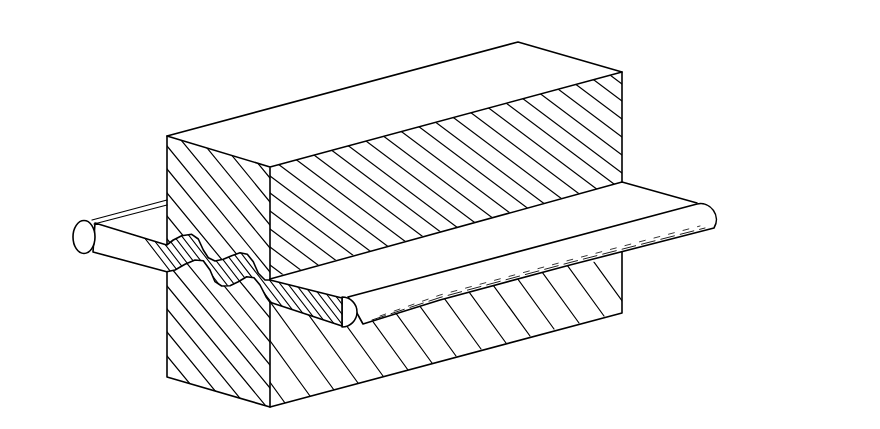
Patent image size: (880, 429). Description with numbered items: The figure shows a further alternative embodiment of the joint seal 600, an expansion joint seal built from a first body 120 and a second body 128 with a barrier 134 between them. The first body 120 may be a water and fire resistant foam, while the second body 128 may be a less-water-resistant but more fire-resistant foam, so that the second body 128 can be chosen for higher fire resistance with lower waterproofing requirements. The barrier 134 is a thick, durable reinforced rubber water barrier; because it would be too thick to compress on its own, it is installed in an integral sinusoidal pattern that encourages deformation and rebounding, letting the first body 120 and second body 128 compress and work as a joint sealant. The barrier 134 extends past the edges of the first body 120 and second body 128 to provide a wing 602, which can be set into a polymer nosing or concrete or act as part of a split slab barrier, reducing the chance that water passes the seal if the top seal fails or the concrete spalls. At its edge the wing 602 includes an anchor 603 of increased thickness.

The joint seal 600 is at (87, 32).
The first body 120 is at (350, 214).
The second body 128 is at (181, 322).
The barrier 134 is at (106, 240).
The wing 602 is at (637, 201).
The anchor 603 is at (677, 223).